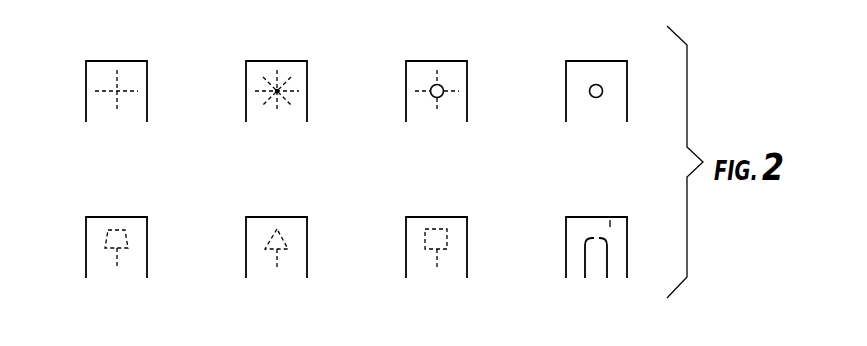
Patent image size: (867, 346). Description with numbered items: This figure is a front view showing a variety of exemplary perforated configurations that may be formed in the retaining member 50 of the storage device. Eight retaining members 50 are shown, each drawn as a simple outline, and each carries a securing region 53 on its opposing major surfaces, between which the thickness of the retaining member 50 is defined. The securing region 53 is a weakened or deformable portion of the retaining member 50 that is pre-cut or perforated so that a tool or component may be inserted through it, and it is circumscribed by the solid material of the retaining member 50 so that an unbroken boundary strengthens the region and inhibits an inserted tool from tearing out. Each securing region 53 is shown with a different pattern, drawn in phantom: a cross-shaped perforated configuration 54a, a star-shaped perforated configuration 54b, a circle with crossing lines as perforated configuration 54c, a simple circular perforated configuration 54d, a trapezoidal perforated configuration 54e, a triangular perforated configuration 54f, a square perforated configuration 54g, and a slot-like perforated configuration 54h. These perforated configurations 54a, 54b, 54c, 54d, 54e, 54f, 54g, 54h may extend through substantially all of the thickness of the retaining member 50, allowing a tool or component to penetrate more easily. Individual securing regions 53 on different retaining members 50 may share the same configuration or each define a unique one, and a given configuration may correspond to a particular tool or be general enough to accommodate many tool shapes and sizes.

The retaining member 50 is at (96, 61).
The securing region 53 is at (610, 220).
The perforated configuration 54a is at (117, 70).
The perforated configuration 54b is at (277, 70).
The perforated configuration 54c is at (437, 70).
The perforated configuration 54d is at (603, 90).
The perforated configuration 54e is at (118, 258).
The perforated configuration 54f is at (278, 258).
The perforated configuration 54g is at (438, 258).
The perforated configuration 54h is at (603, 285).